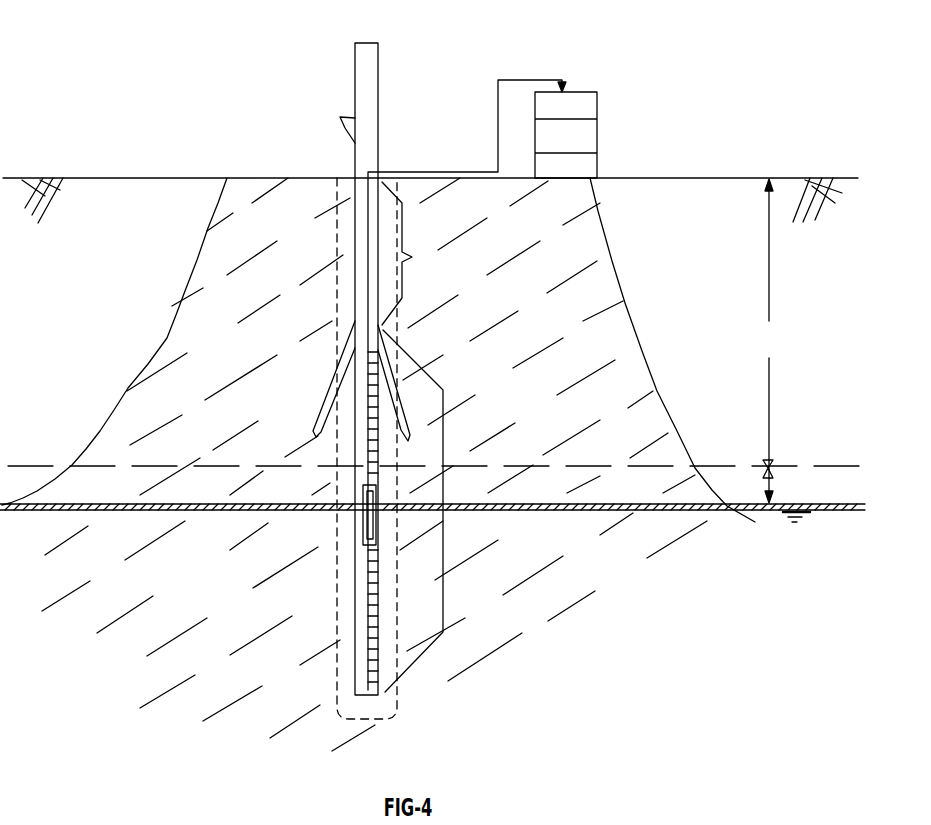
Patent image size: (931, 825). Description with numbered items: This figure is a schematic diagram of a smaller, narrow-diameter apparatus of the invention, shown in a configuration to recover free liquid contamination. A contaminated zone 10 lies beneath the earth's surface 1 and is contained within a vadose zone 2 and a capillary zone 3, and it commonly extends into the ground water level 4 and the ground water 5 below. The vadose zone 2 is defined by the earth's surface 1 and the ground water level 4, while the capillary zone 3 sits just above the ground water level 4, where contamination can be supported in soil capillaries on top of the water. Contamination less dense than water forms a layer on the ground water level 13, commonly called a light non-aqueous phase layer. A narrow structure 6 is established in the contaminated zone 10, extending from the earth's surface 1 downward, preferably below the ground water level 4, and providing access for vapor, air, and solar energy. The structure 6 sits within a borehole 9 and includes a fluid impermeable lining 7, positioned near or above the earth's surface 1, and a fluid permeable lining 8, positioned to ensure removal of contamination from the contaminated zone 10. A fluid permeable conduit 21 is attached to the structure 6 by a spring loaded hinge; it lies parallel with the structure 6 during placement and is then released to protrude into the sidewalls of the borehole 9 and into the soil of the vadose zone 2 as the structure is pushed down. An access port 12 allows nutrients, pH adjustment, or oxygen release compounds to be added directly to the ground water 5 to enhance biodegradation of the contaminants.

The earth's surface 1 is at (41, 172).
The vadose zone 2 is at (770, 341).
The capillary zone 3 is at (760, 478).
The ground water level 4 is at (805, 492).
The ground water 5 is at (627, 588).
The structure 6 is at (367, 248).
The fluid impermeable lining 7 is at (442, 475).
The fluid permeable lining 8 is at (405, 253).
The borehole 9 is at (397, 215).
The contaminated zone 10 is at (250, 330).
The access port 12 is at (333, 124).
The layer on the ground water level 13 is at (208, 477).
The fluid permeable conduit 21 is at (326, 398).